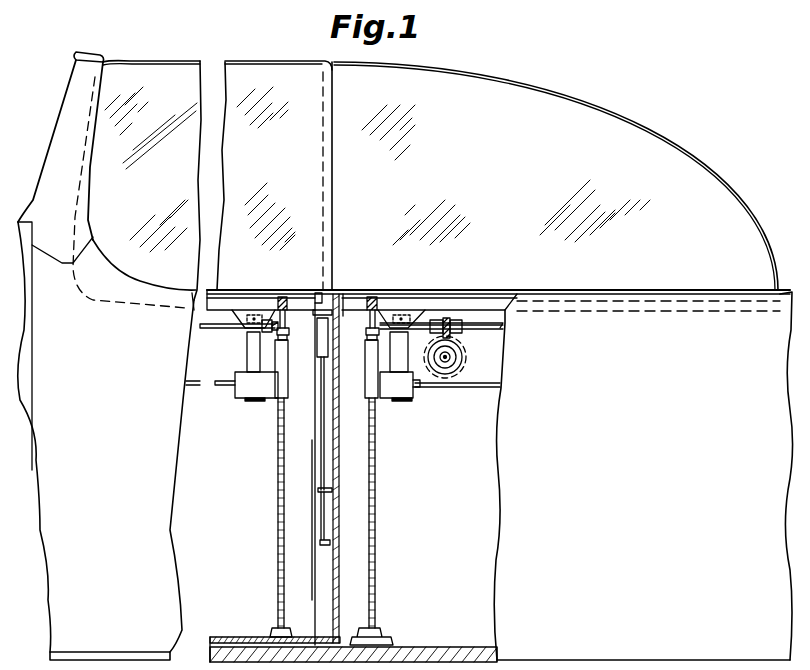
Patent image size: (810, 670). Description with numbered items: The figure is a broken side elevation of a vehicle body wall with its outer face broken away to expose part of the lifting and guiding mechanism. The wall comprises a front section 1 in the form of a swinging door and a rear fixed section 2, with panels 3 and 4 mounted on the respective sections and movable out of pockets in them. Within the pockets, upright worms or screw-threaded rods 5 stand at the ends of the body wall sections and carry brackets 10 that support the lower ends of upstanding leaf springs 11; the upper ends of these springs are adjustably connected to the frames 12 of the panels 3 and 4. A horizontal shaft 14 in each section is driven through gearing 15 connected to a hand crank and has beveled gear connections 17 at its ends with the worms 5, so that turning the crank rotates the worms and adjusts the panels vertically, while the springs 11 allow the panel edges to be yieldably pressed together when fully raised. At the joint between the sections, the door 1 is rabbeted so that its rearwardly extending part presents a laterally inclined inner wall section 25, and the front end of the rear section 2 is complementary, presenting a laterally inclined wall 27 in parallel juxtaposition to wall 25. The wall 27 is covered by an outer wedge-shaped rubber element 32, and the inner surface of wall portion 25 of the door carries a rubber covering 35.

The front section 1 is at (109, 356).
The rear fixed section 2 is at (500, 361).
The panel 3 is at (272, 63).
The panel 4 is at (499, 76).
The upright worm 5 is at (277, 506).
The bracket 10 is at (250, 409).
The leaf spring 11 is at (248, 360).
The panel frame 12 is at (492, 302).
The horizontal shaft 14 is at (226, 326).
The gearing 15 is at (472, 350).
The beveled gear connection 17 is at (291, 340).
The inner wall section 25 is at (318, 582).
The laterally inclined wall 27 is at (318, 491).
The outer wedge-shaped element 32 is at (325, 418).
The rubber covering 35 is at (321, 536).